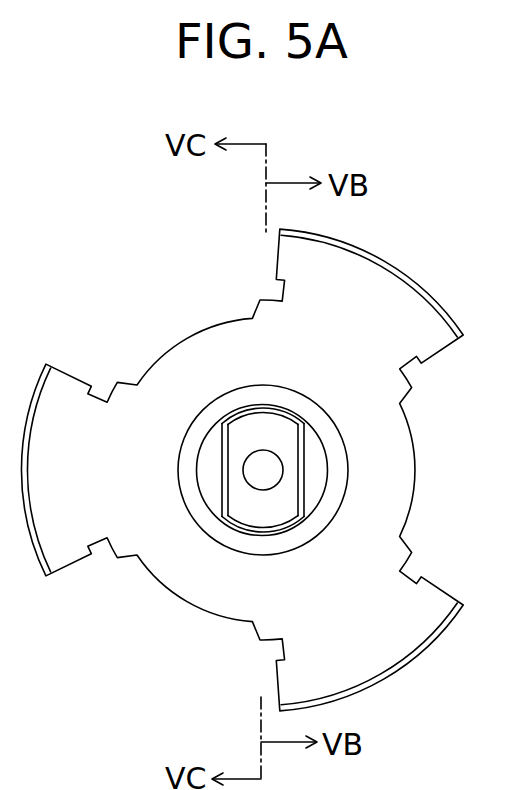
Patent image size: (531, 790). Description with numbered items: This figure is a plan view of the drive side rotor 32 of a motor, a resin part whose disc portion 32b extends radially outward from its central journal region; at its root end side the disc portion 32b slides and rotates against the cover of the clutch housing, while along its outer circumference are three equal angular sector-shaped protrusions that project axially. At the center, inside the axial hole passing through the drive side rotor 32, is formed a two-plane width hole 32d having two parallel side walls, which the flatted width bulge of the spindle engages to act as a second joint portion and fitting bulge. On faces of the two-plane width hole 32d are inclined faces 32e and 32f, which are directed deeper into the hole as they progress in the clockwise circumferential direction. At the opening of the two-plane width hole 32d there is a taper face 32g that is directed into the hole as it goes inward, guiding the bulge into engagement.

The drive side rotor 32 is at (441, 414).
The disc portion 32b is at (403, 671).
The two-plane width hole 32d is at (293, 527).
The inclined face 32e is at (318, 470).
The inclined face 32f is at (208, 470).
The taper face 32g is at (304, 406).